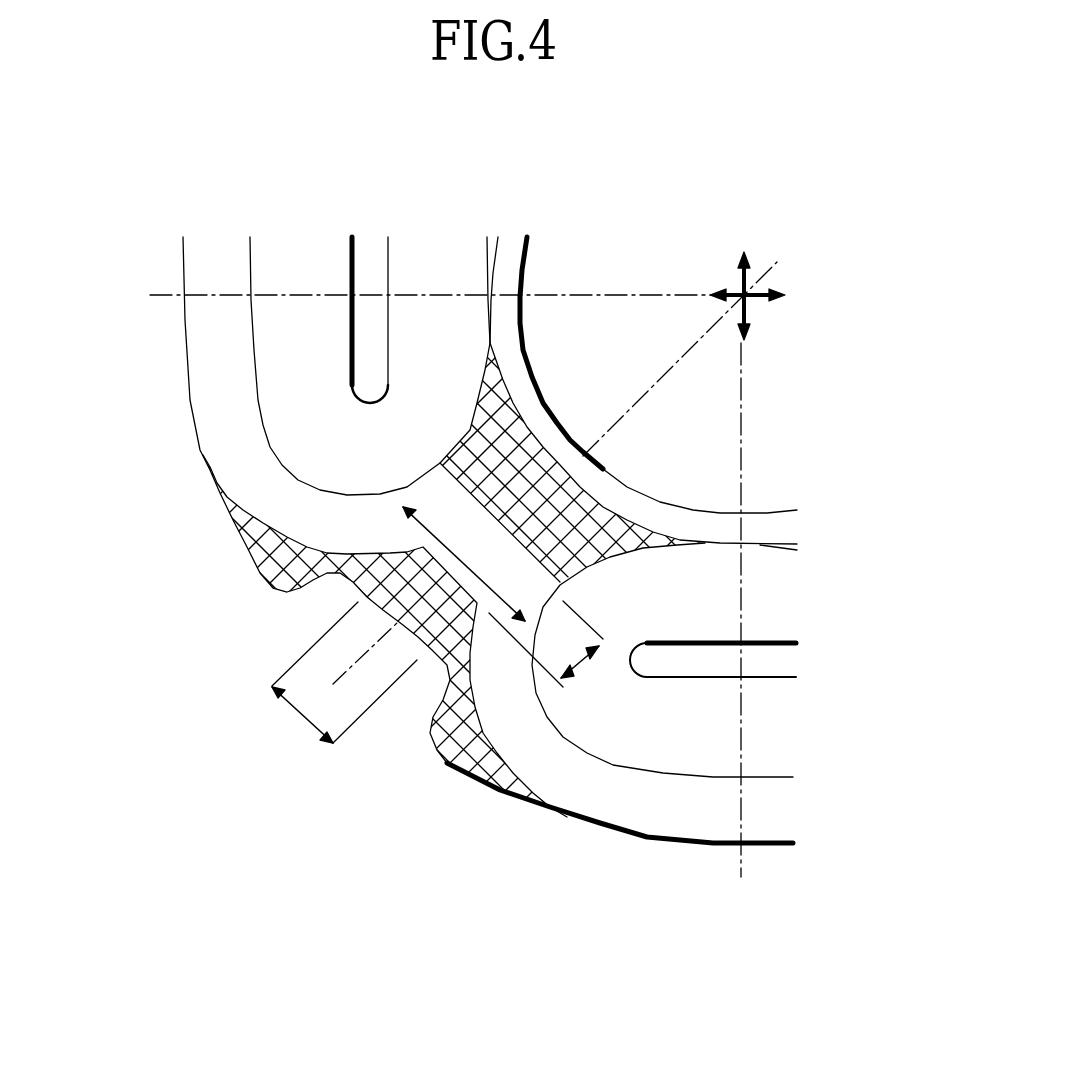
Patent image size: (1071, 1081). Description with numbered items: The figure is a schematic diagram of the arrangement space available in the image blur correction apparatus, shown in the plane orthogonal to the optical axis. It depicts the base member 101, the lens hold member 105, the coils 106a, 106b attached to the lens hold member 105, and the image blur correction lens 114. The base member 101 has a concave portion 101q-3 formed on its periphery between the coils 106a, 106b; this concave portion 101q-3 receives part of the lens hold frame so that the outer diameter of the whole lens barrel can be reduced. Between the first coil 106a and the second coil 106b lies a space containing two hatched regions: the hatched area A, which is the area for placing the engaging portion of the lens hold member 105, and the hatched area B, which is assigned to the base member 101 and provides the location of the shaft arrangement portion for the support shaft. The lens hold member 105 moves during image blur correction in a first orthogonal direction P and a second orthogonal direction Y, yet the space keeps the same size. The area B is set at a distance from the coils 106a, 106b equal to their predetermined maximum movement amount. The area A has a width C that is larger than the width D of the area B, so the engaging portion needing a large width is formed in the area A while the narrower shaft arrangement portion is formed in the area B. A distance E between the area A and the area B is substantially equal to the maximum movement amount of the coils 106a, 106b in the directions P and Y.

The base member 101 is at (780, 845).
The concave portion 101q-3 is at (347, 600).
The lens hold member 105 is at (766, 525).
The coil 106a is at (663, 752).
The coil 106b is at (277, 355).
The image blur correction lens 114 is at (647, 322).
The hatched area A is at (560, 497).
The hatched area B is at (423, 660).
The width C is at (490, 584).
The width D is at (323, 729).
The distance E is at (583, 665).
The direction P is at (755, 262).
The direction Y is at (762, 300).